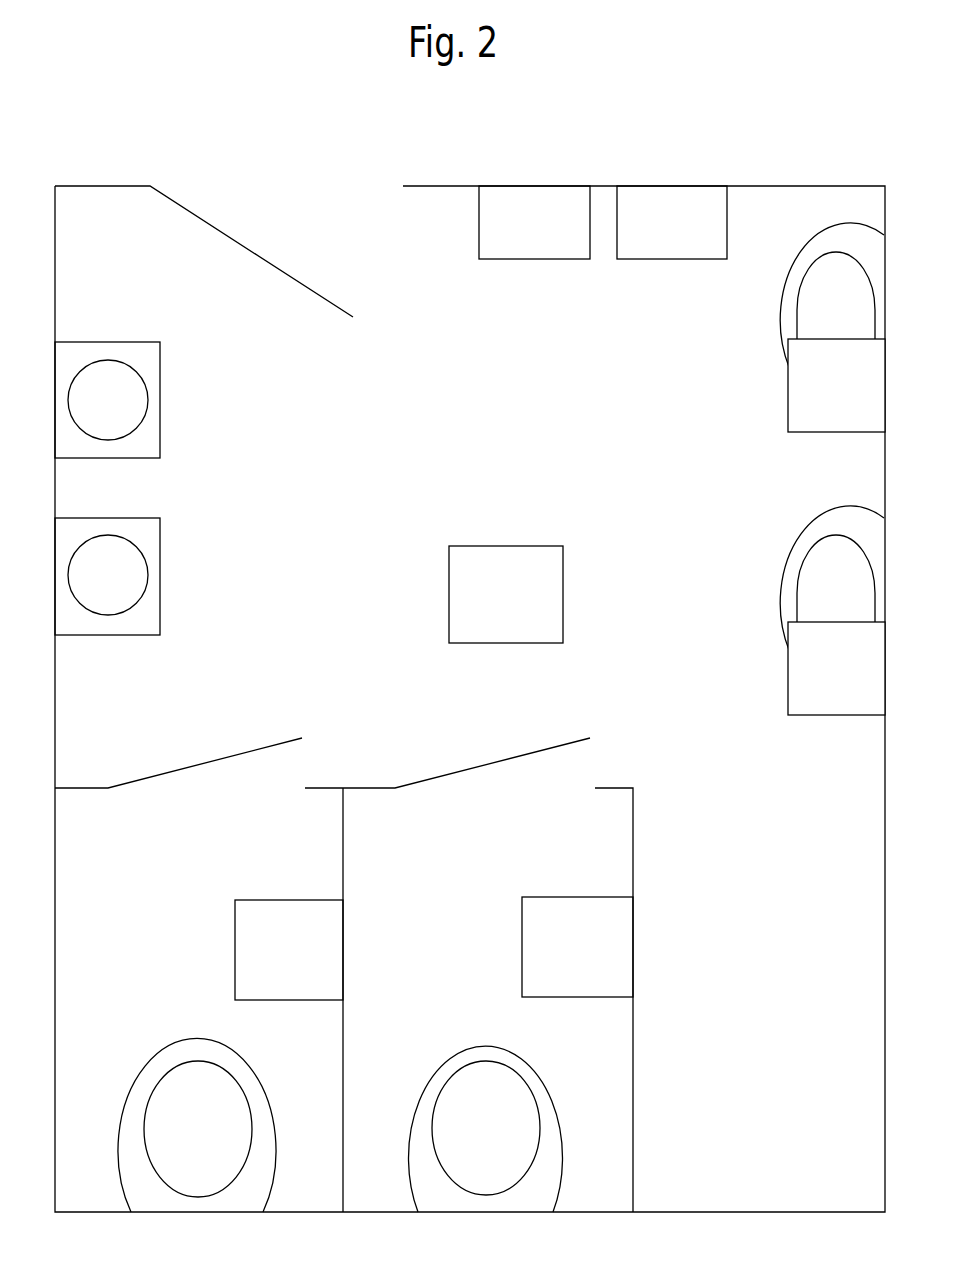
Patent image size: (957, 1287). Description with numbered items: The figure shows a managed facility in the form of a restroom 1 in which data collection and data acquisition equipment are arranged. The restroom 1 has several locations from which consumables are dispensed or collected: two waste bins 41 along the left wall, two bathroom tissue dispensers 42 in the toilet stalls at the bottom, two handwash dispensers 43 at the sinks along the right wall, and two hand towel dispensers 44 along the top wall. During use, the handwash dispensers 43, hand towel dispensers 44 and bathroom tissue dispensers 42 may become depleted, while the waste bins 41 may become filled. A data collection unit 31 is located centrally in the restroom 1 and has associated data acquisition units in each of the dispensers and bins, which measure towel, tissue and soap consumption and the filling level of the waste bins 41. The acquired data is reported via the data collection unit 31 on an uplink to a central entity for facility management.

The restroom 1 is at (311, 445).
The data collection unit 31 is at (530, 546).
The waste bin 41 is at (160, 428).
The bathroom tissue dispenser 42 is at (235, 911).
The handwash dispenser 43 is at (857, 432).
The hand towel dispenser 44 is at (575, 259).